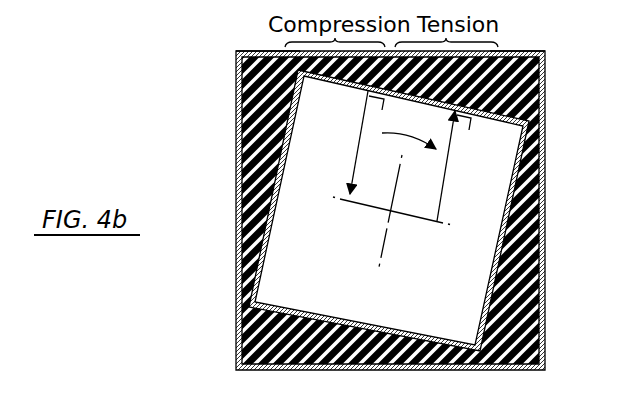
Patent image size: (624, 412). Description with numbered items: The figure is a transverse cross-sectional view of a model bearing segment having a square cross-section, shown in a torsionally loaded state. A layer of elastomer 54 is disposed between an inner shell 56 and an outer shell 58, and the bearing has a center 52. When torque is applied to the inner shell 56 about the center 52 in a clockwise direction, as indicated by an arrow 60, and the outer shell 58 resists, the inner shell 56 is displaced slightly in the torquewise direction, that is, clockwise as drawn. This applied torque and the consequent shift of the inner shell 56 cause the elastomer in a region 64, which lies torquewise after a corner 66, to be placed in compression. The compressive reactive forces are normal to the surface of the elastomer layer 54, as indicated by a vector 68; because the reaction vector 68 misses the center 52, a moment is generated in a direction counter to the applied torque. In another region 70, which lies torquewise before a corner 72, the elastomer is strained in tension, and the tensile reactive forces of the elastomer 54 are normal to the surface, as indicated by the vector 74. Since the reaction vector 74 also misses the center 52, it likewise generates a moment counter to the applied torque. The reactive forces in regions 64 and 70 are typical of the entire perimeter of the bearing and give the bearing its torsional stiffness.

The center 52 is at (389, 212).
The layer of elastomer 54 is at (236, 146).
The inner shell 56 is at (286, 150).
The outer shell 58 is at (236, 177).
The arrow 60 is at (420, 122).
The region 64 is at (283, 42).
The corner 66 is at (236, 51).
The vector 68 is at (365, 122).
The region 70 is at (497, 43).
The corner 72 is at (546, 51).
The vector 74 is at (451, 148).